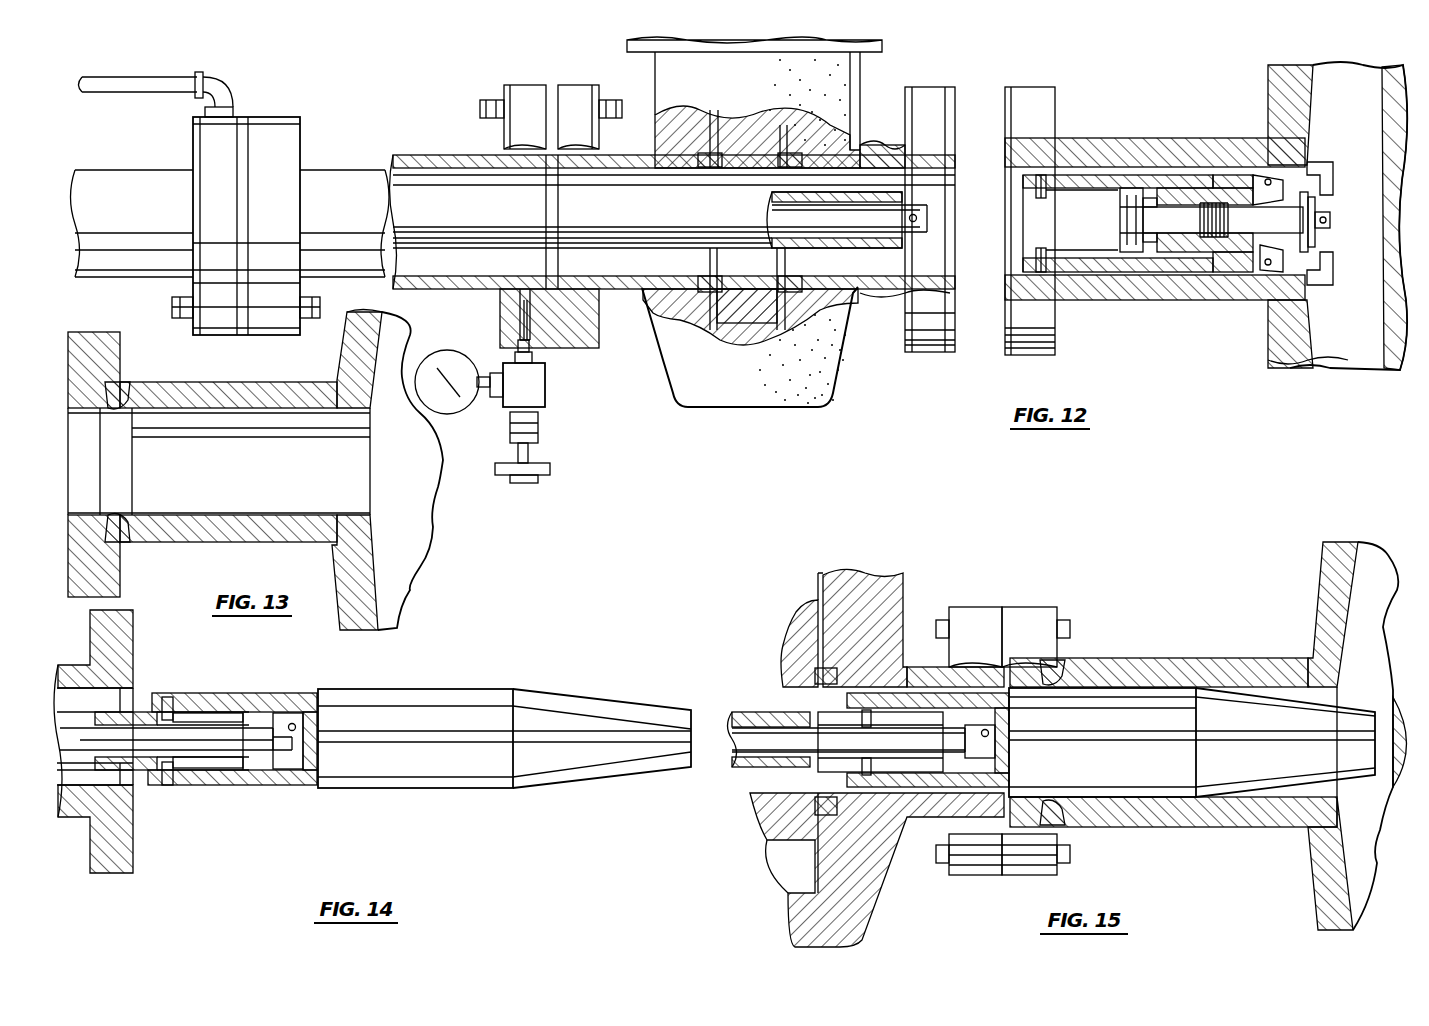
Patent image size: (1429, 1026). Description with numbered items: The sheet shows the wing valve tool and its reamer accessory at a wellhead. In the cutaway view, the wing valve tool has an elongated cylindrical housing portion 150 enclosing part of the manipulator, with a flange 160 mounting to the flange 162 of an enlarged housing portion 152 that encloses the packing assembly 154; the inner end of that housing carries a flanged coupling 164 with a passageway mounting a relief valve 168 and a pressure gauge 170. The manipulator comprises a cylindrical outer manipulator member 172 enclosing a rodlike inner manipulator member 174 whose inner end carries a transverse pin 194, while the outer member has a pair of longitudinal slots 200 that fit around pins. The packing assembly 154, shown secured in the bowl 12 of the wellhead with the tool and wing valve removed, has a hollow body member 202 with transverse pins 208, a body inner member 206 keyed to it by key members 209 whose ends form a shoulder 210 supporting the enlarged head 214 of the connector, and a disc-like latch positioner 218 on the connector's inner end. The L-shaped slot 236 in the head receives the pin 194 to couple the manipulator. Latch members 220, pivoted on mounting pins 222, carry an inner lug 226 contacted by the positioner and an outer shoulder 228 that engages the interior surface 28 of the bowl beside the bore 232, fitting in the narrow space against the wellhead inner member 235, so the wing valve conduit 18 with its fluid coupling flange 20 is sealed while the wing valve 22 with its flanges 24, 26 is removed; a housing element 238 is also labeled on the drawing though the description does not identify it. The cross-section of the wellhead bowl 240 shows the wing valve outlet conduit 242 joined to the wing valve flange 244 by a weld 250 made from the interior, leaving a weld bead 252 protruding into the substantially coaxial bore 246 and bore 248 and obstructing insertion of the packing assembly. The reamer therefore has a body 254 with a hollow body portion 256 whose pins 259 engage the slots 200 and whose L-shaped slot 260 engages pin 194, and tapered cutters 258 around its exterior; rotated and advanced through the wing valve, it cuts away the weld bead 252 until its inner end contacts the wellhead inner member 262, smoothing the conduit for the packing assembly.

In FIG. 12, the bowl 12 is at (1300, 360).
In FIG. 12, the wing valve conduit 18 is at (1187, 292).
In FIG. 12, the fluid coupling flange 20 is at (1028, 345).
In FIG. 12, the wing valve 22 is at (760, 384).
In FIG. 15, the wing valve 22 is at (872, 588).
In FIG. 12, the fluid coupling flange 24 is at (930, 335).
In FIG. 12, the fluid coupling flange 26 is at (572, 322).
In FIG. 15, the fluid coupling flange 26 is at (972, 622).
In FIG. 12, the interior surface 28 is at (1364, 360).
In FIG. 12, the elongated cylindrical housing portion 150 is at (158, 170).
In FIG. 12, the enlarged housing portion 152 is at (312, 165).
In FIG. 12, the packing assembly 154 is at (998, 276).
In FIG. 12, the flange 160 is at (210, 286).
In FIG. 12, the flange 162 is at (270, 118).
In FIG. 12, the flanged coupling 164 is at (501, 317).
In FIG. 14, the flanged coupling 164 is at (112, 822).
In FIG. 12, the relief valve 168 is at (535, 390).
In FIG. 12, the pressure gauge 170 is at (452, 396).
In FIG. 12, the outer manipulator member 172 is at (466, 198).
In FIG. 14, the outer manipulator member 172 is at (137, 716).
In FIG. 15, the outer manipulator member 172 is at (742, 738).
In FIG. 12, the inner manipulator member 174 is at (852, 220).
In FIG. 14, the inner manipulator member 174 is at (229, 754).
In FIG. 15, the inner manipulator member 174 is at (802, 735).
In FIG. 12, the pin 194 is at (918, 216).
In FIG. 14, the pin 194 is at (298, 728).
In FIG. 15, the pin 194 is at (989, 733).
In FIG. 12, the slots 200 is at (868, 194).
In FIG. 14, the slots 200 is at (196, 768).
In FIG. 15, the slots 200 is at (891, 772).
In FIG. 12, the body member 202 is at (1205, 262).
In FIG. 12, the body inner member 206 is at (1196, 206).
In FIG. 12, the pins 208 is at (1046, 194).
In FIG. 12, the key members 209 is at (1176, 248).
In FIG. 12, the shoulder 210 is at (1131, 195).
In FIG. 12, the enlarged head 214 is at (1070, 142).
In FIG. 12, the latch positioner 218 is at (1312, 237).
In FIG. 12, the latch members 220 is at (1327, 162).
In FIG. 12, the mounting pins 222 is at (1310, 322).
In FIG. 12, the lug 226 is at (1328, 208).
In FIG. 12, the shoulder 228 is at (1254, 190).
In FIG. 12, the bore 232 is at (1078, 266).
In FIG. 15, the bore 232 is at (1268, 775).
In FIG. 12, the wellhead inner member 235 is at (1283, 358).
In FIG. 12, the L-shaped slot 236 is at (1128, 200).
In FIG. 12, the housing plate 238 is at (736, 143).
In FIG. 15, the housing plate 238 is at (776, 818).
In FIG. 13, the wellhead bowl 240 is at (358, 367).
In FIG. 15, the wellhead bowl 240 is at (1313, 612).
In FIG. 13, the wing valve outlet conduit 242 is at (204, 396).
In FIG. 15, the wing valve outlet conduit 242 is at (1168, 666).
In FIG. 13, the wing valve flange 244 is at (100, 350).
In FIG. 15, the wing valve flange 244 is at (1031, 622).
In FIG. 13, the bore 246 is at (213, 528).
In FIG. 13, the bore 248 is at (96, 520).
In FIG. 13, the weld 250 is at (130, 532).
In FIG. 15, the weld 250 is at (1062, 674).
In FIG. 13, the weld bead 252 is at (125, 438).
In FIG. 14, the body 254 is at (372, 754).
In FIG. 15, the body 254 is at (1117, 762).
In FIG. 14, the hollow body portion 256 is at (240, 694).
In FIG. 15, the hollow body portion 256 is at (907, 703).
In FIG. 14, the cutters 258 is at (498, 784).
In FIG. 15, the cutters 258 is at (1200, 786).
In FIG. 14, the pins 259 is at (197, 758).
In FIG. 15, the pins 259 is at (868, 718).
In FIG. 14, the L-shaped slot 260 is at (310, 746).
In FIG. 15, the L-shaped slot 260 is at (990, 744).
In FIG. 15, the wellhead inner member 262 is at (1400, 756).